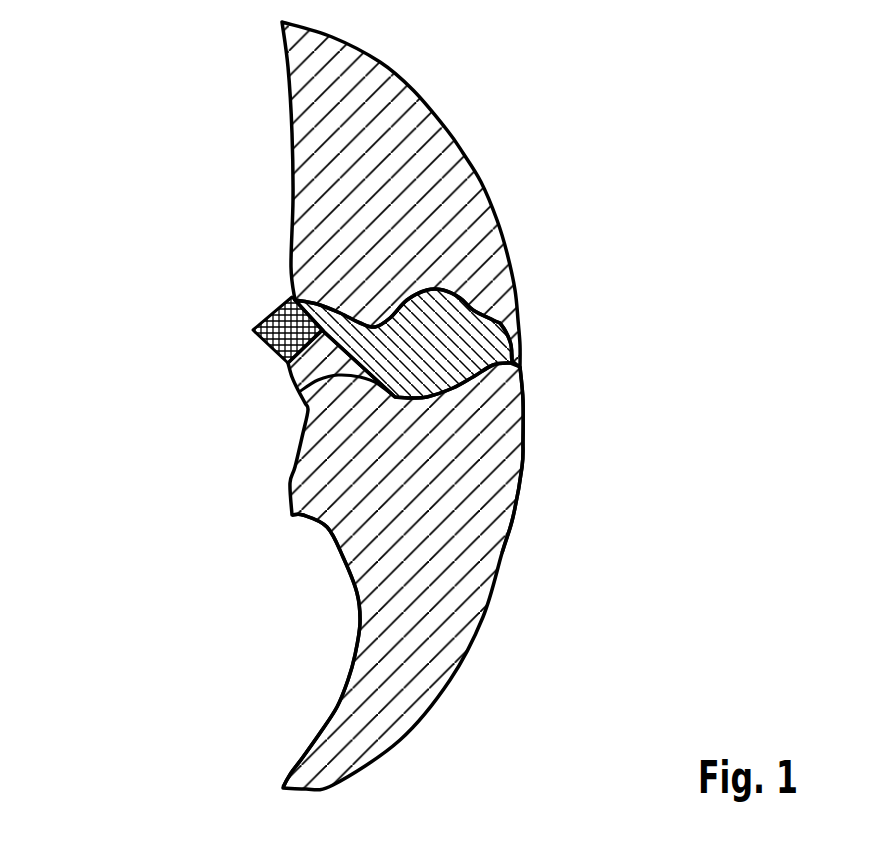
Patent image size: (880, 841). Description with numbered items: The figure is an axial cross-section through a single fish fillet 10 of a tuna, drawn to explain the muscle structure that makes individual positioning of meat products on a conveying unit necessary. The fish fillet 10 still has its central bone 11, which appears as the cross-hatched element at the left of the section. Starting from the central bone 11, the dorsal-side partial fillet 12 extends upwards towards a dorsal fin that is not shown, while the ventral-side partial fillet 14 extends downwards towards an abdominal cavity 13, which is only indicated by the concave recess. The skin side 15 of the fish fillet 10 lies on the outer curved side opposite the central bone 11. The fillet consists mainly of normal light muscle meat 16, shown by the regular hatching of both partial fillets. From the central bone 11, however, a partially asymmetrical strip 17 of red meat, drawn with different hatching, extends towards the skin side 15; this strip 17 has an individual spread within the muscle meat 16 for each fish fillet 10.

The fish fillet 10 is at (315, 406).
The central bone 11 is at (267, 345).
The dorsal-side partial fillet 12 is at (490, 177).
The abdominal cavity 13 is at (323, 622).
The ventral-side partial fillet 14 is at (512, 562).
The skin side 15 is at (520, 473).
The light muscle meat 16 is at (440, 142).
The strip of red meat 17 is at (467, 293).